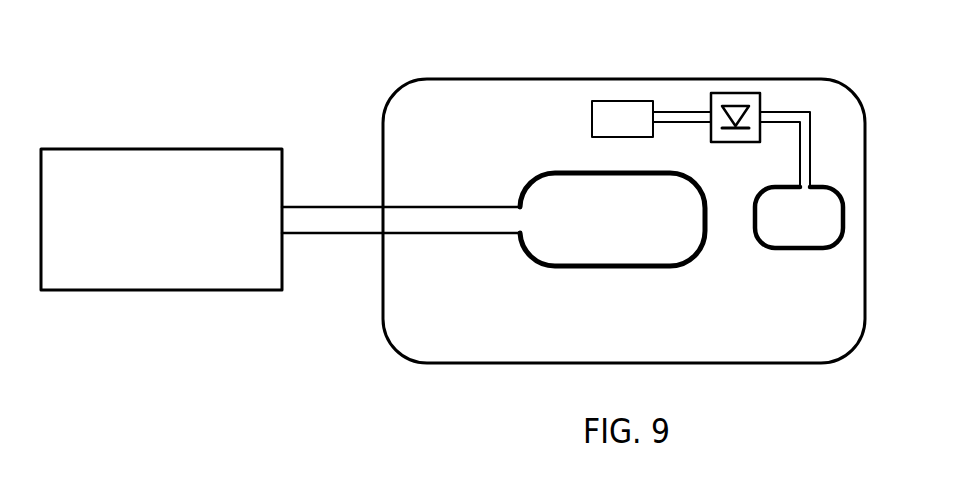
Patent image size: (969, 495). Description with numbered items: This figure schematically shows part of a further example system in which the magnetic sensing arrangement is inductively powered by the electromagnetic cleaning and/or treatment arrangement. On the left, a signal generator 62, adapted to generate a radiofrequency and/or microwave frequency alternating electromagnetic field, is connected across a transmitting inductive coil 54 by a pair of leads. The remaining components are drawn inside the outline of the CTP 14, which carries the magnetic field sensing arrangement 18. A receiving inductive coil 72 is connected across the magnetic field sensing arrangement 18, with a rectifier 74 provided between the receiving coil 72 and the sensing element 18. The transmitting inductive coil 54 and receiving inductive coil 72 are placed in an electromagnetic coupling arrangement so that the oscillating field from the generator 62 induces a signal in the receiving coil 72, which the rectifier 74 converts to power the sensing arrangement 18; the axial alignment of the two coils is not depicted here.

The CTP 14 is at (853, 46).
The magnetic field sensing arrangement 18 is at (613, 101).
The transmitting inductive coil 54 is at (615, 272).
The signal generator 62 is at (110, 147).
The receiving inductive coil 72 is at (843, 207).
The rectifier 74 is at (729, 93).